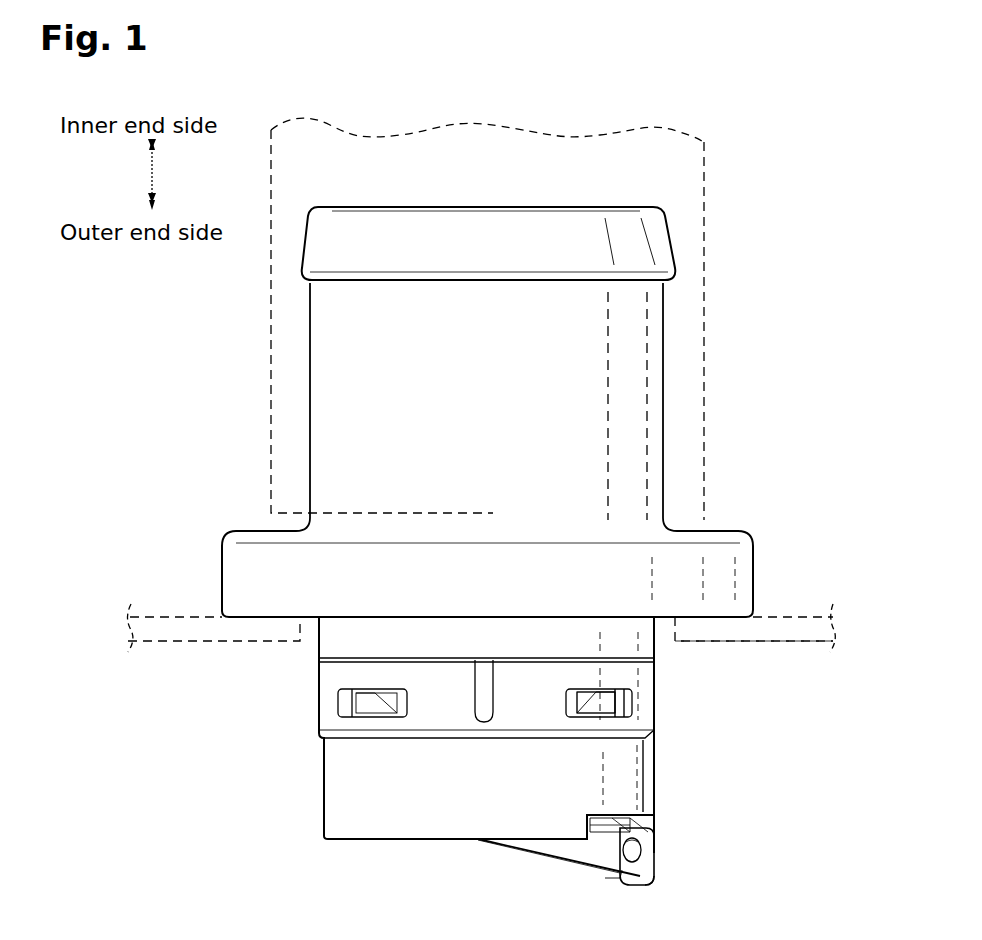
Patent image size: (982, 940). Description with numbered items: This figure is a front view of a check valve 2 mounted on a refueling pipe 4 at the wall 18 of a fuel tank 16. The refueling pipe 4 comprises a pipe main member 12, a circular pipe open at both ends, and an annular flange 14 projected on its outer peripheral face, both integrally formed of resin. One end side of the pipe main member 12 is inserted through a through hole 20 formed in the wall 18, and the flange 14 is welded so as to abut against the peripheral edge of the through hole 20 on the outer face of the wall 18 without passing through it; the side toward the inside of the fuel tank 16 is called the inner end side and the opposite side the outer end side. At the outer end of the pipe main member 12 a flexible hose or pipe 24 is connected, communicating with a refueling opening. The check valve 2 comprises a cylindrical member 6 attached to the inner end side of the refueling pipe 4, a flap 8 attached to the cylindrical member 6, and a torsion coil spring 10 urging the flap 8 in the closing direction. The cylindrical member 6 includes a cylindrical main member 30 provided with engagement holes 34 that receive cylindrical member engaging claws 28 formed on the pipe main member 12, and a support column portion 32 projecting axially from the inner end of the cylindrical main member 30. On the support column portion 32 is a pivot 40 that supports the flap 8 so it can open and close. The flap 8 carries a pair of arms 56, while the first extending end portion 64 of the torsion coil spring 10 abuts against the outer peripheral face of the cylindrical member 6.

The check valve 2 is at (302, 858).
The refueling pipe 4 is at (668, 354).
The cylindrical member 6 is at (318, 788).
The flap 8 is at (505, 850).
The torsion coil spring 10 is at (672, 880).
The pipe main member 12 is at (653, 315).
The annular flange 14 is at (742, 571).
The fuel tank 16 is at (826, 650).
The wall 18 is at (798, 617).
The through hole 20 is at (660, 646).
The hose or pipe 24 is at (704, 187).
The cylindrical member engaging claw 28 is at (603, 705).
The cylindrical main member 30 is at (625, 772).
The support column portion 32 is at (658, 880).
The engagement hole 34 is at (630, 700).
The pivot 40 is at (632, 852).
The arms 56 is at (566, 853).
The first extending end portion 64 is at (655, 823).